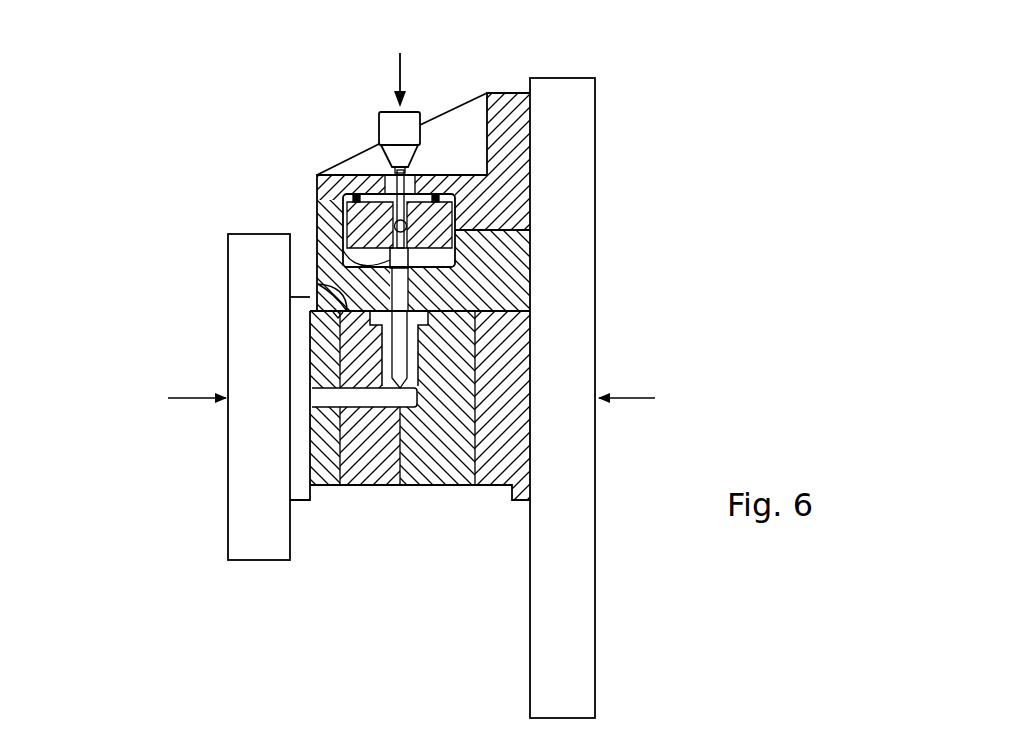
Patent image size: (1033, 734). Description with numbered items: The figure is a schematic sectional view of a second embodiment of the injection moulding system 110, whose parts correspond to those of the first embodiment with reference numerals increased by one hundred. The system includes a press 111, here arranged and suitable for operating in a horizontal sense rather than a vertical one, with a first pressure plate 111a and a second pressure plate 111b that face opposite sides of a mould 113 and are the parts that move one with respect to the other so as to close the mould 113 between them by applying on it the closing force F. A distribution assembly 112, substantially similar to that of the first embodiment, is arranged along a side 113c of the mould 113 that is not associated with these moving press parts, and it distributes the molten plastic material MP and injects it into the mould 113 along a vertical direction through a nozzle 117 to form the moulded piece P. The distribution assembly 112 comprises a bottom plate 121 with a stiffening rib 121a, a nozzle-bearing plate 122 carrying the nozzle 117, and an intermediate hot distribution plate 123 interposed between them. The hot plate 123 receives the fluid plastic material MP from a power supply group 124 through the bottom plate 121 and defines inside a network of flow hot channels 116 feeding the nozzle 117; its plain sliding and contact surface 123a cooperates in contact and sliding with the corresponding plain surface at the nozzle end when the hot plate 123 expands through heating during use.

The injection moulding system 110 is at (177, 145).
The press 111 is at (163, 555).
The first pressure plate 111a is at (228, 490).
The second pressure plate 111b is at (585, 591).
The distribution assembly 112 is at (300, 173).
The mould 113 is at (387, 513).
The side of the mould 113c is at (318, 284).
The flow hot channels 116 is at (397, 221).
The injection nozzle 117 is at (403, 357).
The bottom plate 121 is at (508, 106).
The stiffening rib 121a is at (451, 117).
The nozzle-bearing plate 122 is at (530, 250).
The intermediate hot distribution plate 123 is at (455, 213).
The sliding and contact surface 123a is at (343, 248).
The power supply group 124 is at (376, 125).
The plastic material MP is at (398, 73).
The closing force F is at (189, 394).
The piece P is at (418, 405).